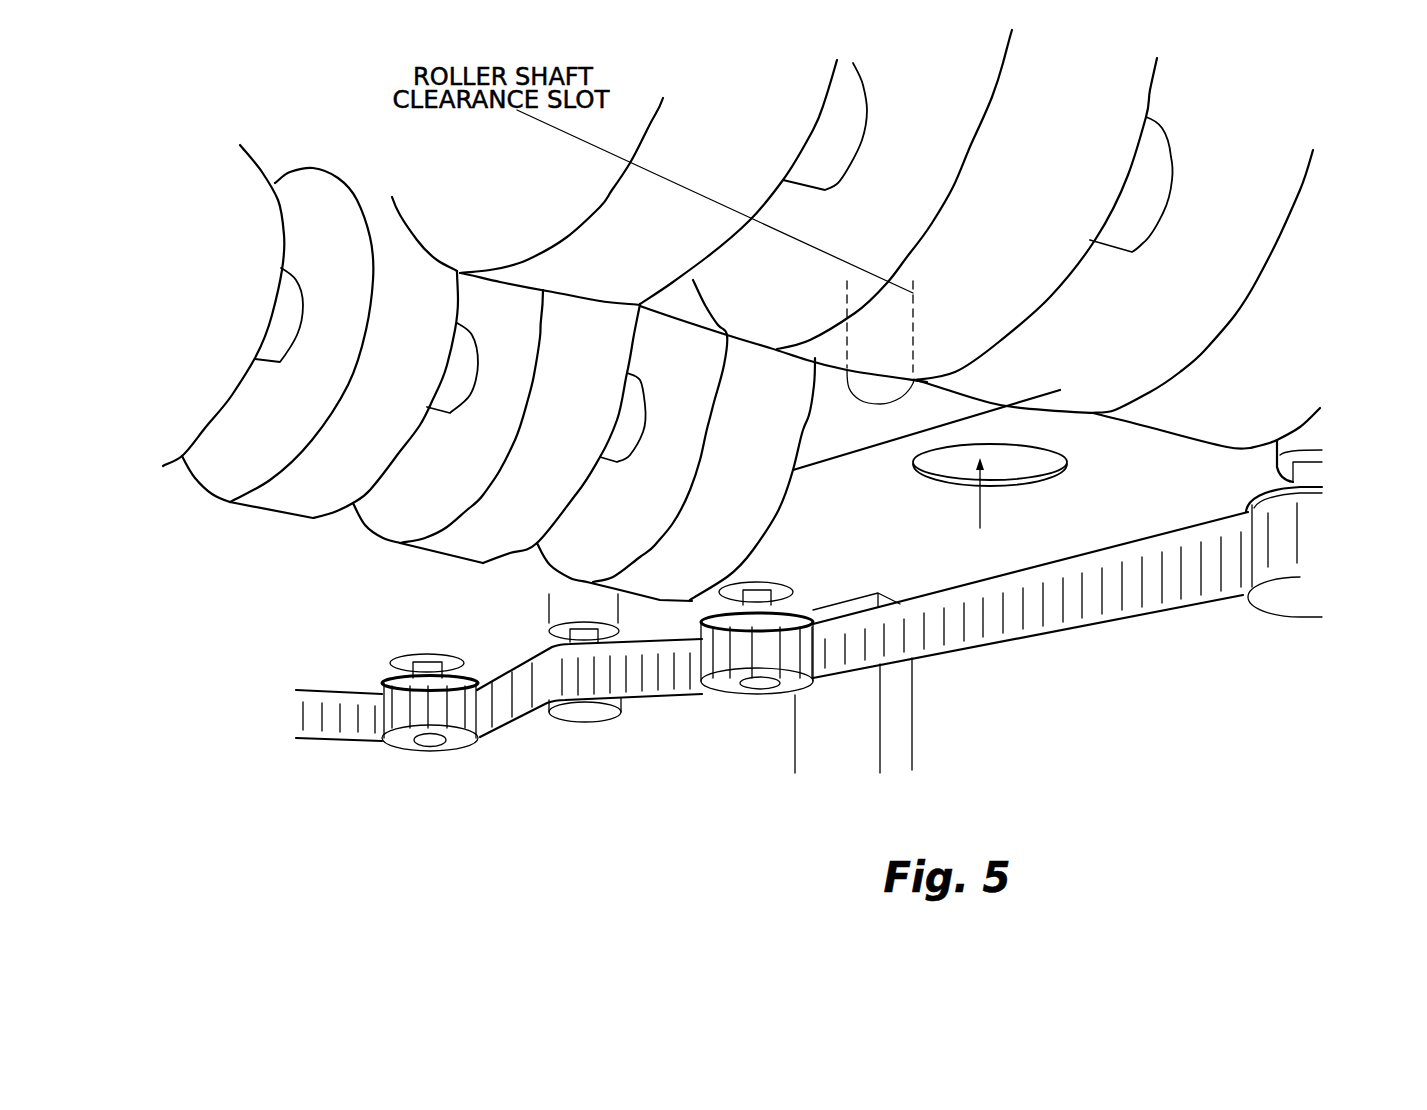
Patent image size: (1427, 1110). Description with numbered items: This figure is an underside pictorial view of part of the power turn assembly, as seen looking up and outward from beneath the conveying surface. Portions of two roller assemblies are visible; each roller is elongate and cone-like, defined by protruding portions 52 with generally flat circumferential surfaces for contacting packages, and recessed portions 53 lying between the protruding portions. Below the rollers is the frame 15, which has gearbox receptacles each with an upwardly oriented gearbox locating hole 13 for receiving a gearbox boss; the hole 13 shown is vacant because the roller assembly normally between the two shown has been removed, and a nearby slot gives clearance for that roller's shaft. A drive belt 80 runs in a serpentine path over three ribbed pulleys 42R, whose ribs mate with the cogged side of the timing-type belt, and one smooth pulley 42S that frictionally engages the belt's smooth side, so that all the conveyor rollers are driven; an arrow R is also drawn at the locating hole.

The protruding portions 52 is at (742, 315).
The recessed portions 53 is at (714, 262).
The gearbox locating hole 13 is at (1007, 472).
The roller direction reference R is at (980, 510).
The drive belt 80 is at (972, 638).
The frame 15 is at (895, 755).
The ribbed pulley 42R is at (398, 740).
The smooth pulley 42S is at (578, 717).